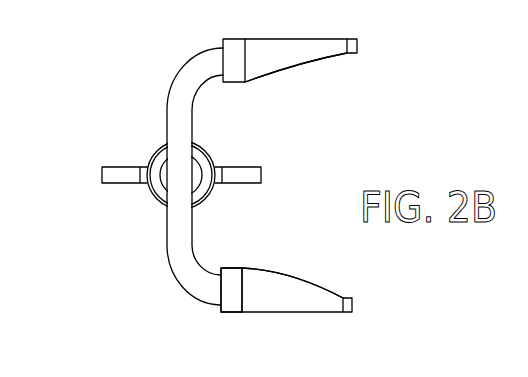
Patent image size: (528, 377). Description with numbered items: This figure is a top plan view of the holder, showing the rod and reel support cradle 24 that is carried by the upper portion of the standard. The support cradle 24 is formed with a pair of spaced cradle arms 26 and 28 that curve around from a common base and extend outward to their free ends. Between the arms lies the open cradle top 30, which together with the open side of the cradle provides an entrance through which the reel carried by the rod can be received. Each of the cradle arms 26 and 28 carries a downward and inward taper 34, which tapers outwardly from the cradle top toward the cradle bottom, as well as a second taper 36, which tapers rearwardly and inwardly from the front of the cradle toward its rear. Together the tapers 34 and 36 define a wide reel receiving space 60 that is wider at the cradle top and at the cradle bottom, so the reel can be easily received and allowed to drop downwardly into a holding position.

The rod and reel support cradle 24 is at (246, 197).
The cradle arm 26 is at (364, 44).
The cradle arm 28 is at (359, 305).
The open cradle top 30 is at (275, 376).
The downward and inward taper 34 is at (265, 298).
The second taper 36 is at (302, 70).
The wide reel receiving space 60 is at (318, 178).